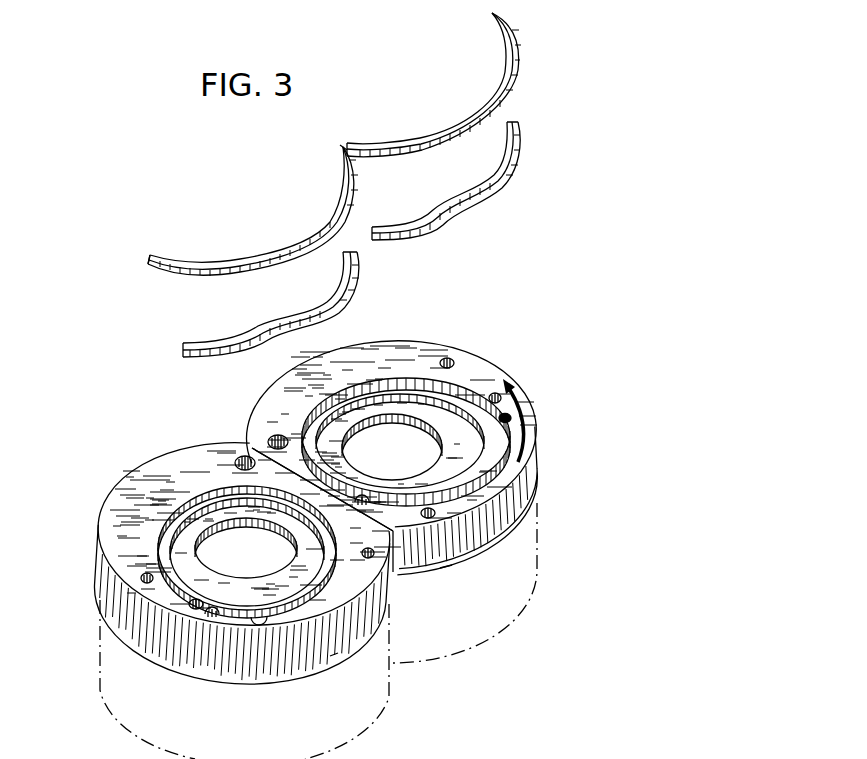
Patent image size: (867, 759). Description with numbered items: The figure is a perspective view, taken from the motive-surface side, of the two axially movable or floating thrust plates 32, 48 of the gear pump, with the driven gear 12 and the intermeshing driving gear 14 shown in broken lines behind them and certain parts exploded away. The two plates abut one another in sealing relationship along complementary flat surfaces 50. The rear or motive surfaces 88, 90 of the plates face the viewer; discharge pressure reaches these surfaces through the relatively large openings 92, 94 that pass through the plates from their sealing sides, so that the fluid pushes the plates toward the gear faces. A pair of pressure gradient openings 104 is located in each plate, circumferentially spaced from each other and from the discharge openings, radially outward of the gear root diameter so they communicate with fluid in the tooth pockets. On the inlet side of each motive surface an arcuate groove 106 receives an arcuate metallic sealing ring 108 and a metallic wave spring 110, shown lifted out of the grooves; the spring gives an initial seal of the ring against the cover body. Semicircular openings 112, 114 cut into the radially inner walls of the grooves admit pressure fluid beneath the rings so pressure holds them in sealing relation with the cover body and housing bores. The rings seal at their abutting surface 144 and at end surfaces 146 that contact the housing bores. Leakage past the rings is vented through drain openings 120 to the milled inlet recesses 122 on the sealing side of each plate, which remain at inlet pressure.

The driven gear 12 is at (535, 585).
The driving gear 14 is at (125, 717).
The floating thrust plate 32 is at (432, 341).
The floating thrust plate 48 is at (98, 529).
The complementary flat surfaces 50 is at (289, 480).
The motive surface 88 is at (314, 370).
The motive surface 90 is at (135, 498).
The discharge pressure opening 92 is at (270, 440).
The discharge pressure opening 94 is at (234, 459).
The pressure gradient openings 104 is at (497, 396).
The arcuate grooves 106 is at (508, 417).
The arcuate metallic sealing rings 108 is at (516, 63).
The metallic wave springs 110 is at (520, 150).
The openings 112 is at (362, 498).
The openings 114 is at (214, 609).
The drain openings 120 is at (368, 558).
The inlet recesses 122 is at (452, 565).
The abutting surface 144 is at (343, 147).
The end surfaces 146 is at (152, 256).